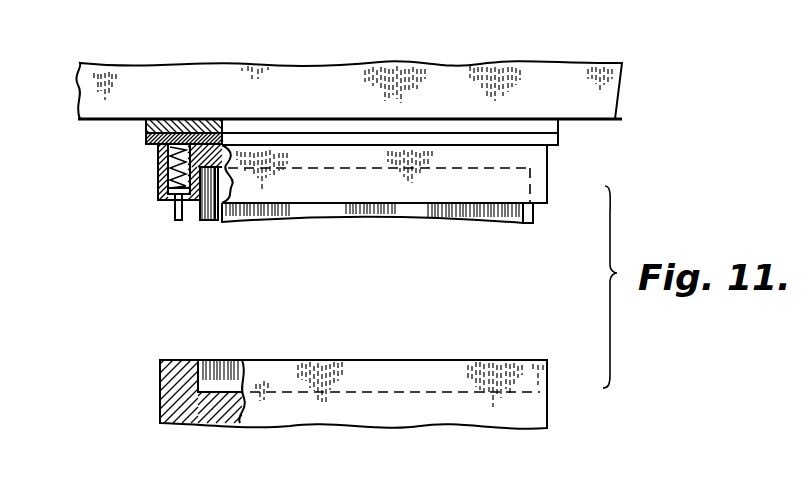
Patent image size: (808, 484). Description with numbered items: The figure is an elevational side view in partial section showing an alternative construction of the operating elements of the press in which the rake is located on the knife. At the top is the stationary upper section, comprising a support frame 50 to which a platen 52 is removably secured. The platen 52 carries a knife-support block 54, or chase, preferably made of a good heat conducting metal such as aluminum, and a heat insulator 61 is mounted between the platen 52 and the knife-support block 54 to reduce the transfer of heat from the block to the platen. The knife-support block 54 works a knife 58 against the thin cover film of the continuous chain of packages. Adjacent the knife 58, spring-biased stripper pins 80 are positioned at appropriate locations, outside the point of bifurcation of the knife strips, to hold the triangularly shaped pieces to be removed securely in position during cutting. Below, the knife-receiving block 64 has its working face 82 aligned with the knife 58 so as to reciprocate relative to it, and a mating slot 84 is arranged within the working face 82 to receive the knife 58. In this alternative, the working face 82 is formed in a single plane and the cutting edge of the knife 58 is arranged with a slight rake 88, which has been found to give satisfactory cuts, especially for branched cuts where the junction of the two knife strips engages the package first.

The support frame 50 is at (596, 76).
The platen 52 is at (203, 119).
The knife-support block 54 is at (158, 150).
The knife 58 is at (219, 222).
The heat insulator 61 is at (558, 142).
The knife-receiving block 64 is at (160, 405).
The spring-biased stripper pins 80 is at (175, 208).
The working face 82 is at (423, 360).
The mating slot 84 is at (199, 374).
The rake 88 is at (308, 222).